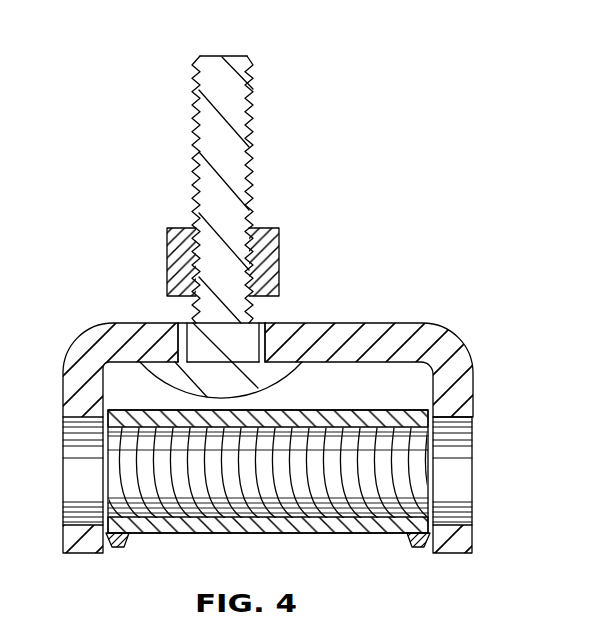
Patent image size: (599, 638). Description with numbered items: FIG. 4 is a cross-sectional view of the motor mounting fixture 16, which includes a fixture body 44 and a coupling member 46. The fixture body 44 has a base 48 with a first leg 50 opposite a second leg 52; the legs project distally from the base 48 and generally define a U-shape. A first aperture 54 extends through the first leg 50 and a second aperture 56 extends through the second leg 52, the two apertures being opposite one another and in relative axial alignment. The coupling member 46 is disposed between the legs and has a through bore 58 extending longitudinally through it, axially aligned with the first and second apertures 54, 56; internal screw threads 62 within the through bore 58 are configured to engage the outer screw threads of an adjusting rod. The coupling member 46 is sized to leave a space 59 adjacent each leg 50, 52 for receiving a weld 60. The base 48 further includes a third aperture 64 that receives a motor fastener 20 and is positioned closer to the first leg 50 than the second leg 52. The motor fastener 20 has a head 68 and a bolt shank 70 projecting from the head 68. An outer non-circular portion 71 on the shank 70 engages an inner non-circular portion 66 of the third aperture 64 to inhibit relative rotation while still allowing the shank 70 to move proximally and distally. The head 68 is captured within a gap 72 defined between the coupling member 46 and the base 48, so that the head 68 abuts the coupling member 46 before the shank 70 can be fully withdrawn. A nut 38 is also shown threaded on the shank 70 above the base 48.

The motor mounting fixture 16 is at (117, 132).
The motor fastener 20 is at (252, 100).
The bolt shank 70 is at (243, 171).
The nut 38 is at (278, 248).
The fixture body 44 is at (93, 323).
The base 48 is at (398, 332).
The third aperture 64 is at (179, 319).
The outer non-circular portion 71 is at (242, 335).
The inner non-circular portion 66 is at (172, 343).
The head 68 is at (270, 377).
The gap 72 is at (385, 380).
The first aperture 54 is at (65, 482).
The second aperture 56 is at (466, 453).
The space 59 is at (105, 451).
The first leg 50 is at (82, 553).
The second leg 52 is at (450, 553).
The coupling member 46 is at (345, 531).
The internal screw threads 62 is at (233, 505).
The through bore 58 is at (274, 473).
The weld 60 is at (118, 543).